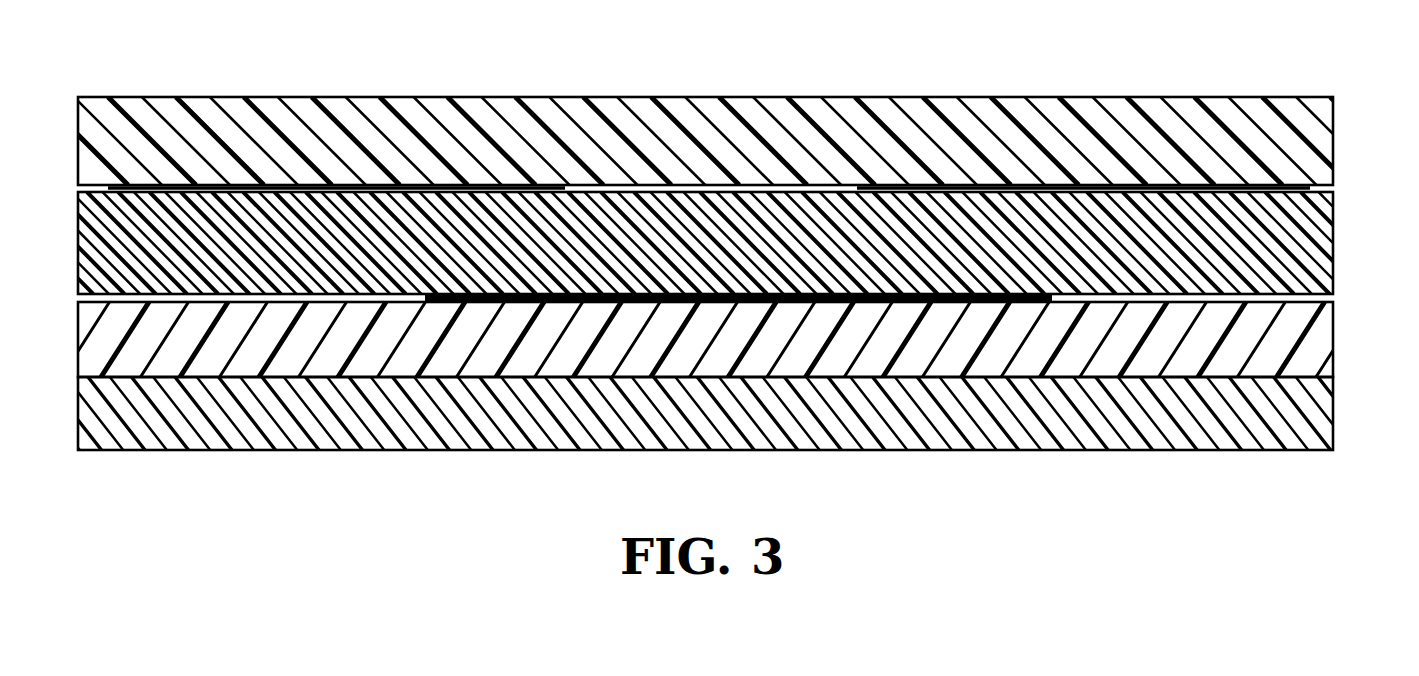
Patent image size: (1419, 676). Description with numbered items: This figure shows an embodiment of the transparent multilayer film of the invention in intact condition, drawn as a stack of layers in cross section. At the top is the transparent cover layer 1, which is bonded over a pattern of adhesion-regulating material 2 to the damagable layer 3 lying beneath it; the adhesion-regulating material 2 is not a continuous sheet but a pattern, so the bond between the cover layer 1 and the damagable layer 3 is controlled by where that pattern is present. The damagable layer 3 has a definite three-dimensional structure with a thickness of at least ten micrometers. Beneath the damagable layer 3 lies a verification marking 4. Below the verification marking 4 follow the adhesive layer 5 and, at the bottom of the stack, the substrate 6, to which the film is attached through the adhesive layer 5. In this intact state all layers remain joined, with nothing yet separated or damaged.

The transparent cover layer 1 is at (1323, 110).
The pattern of adhesion-regulating material 2 is at (1286, 186).
The damagable layer 3 is at (1317, 235).
The verification marking 4 is at (877, 300).
The adhesive layer 5 is at (1320, 343).
The substrate 6 is at (1318, 410).